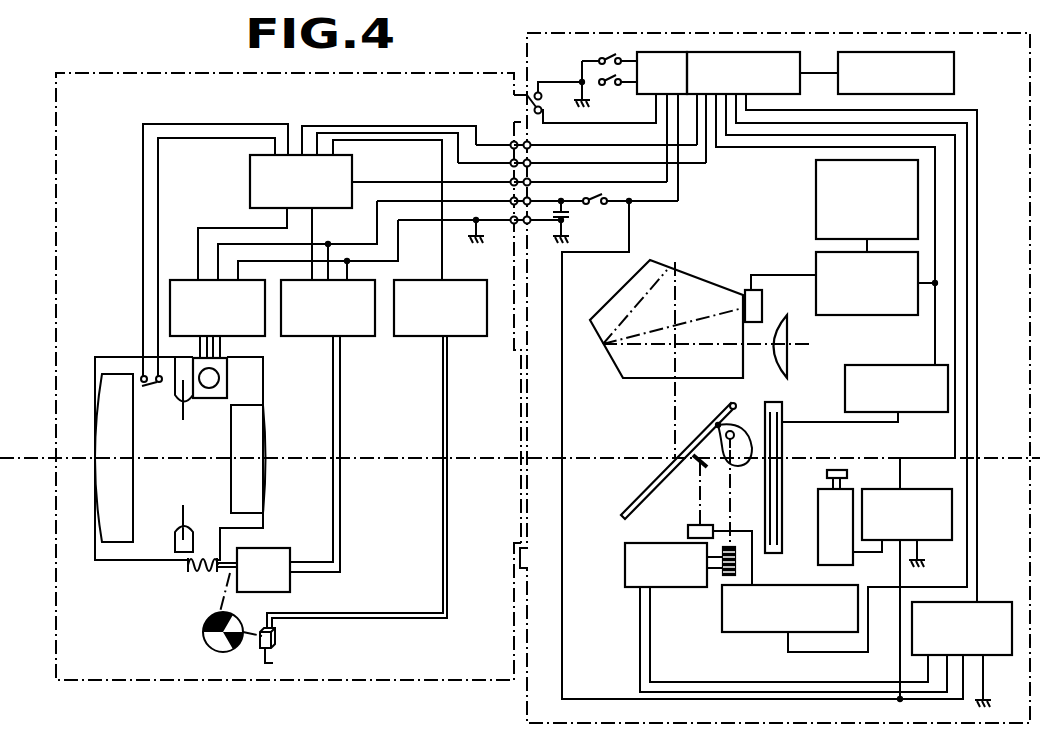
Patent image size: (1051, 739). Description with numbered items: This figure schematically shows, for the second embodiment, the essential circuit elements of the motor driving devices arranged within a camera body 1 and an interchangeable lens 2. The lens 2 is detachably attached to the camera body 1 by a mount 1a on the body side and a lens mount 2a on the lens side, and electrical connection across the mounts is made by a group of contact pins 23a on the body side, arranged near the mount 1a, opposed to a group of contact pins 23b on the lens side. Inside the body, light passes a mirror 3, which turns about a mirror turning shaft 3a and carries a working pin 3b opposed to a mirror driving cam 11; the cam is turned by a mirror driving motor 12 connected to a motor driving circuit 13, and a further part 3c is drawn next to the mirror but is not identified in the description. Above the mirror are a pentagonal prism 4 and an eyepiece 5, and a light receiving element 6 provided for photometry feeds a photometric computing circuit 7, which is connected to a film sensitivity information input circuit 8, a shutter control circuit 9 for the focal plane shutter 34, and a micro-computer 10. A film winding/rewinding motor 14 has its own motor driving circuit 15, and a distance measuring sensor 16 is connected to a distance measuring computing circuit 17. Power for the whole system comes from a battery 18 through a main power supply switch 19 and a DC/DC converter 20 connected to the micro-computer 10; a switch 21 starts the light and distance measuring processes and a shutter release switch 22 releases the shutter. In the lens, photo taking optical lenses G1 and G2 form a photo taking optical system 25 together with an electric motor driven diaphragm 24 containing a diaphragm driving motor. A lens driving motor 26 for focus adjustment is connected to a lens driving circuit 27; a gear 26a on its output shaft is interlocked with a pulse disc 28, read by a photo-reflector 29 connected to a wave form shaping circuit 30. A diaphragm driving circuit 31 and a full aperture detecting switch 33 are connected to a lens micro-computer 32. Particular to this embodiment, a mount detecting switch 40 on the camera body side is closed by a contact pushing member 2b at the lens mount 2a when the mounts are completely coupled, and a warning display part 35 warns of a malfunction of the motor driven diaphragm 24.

The camera body 1 is at (527, 704).
The mount 1a is at (527, 552).
The interchangeable lens 2 is at (240, 682).
The lens mount 2a is at (514, 545).
The contact pushing member 2b is at (518, 95).
The mirror 3 is at (623, 500).
The mirror turning shaft 3a is at (738, 403).
The working pin 3b is at (716, 424).
The sub mirror 3c is at (706, 470).
The pentagonal prism 4 is at (652, 270).
The eyepiece 5 is at (788, 333).
The light receiving element 6 is at (745, 292).
The photometric computing circuit 7 is at (816, 258).
The film sensitivity information input circuit 8 is at (816, 182).
The shutter control circuit 9 is at (856, 365).
The micro-computer 10 is at (800, 66).
The mirror driving cam 11 is at (740, 468).
The mirror driving motor 12 is at (625, 576).
The motor driving circuit 13 is at (1000, 602).
The film winding/rewinding motor 14 is at (818, 490).
The motor driving circuit 15 is at (868, 489).
The distance measuring sensor 16 is at (690, 525).
The distance measuring computing circuit 17 is at (744, 632).
The battery 18 is at (568, 214).
The main power supply switch 19 is at (597, 205).
The DC/DC converter 20 is at (648, 94).
The switch 21 is at (600, 56).
The shutter release switch 22 is at (614, 86).
The group of contact pins 23a is at (530, 142).
The group of contact pins 23b is at (512, 142).
The electric motor driven diaphragm 24 is at (228, 360).
The photo taking optical system 25 is at (150, 562).
The lens driving motor 26 is at (292, 586).
The gear 26a is at (200, 575).
The lens driving circuit 27 is at (358, 336).
The pulse disc 28 is at (210, 650).
The photo-reflector 29 is at (277, 640).
The wave form shaping circuit 30 is at (468, 336).
The diaphragm driving circuit 31 is at (178, 280).
The micro-computer 32 is at (250, 164).
The full aperture detecting switch 33 is at (150, 388).
The focal plane shutter 34 is at (782, 444).
The warning display part 35 is at (954, 70).
The mount detecting switch 40 is at (539, 92).
The photo taking optical lens G1 is at (126, 480).
The photo taking optical lens G2 is at (255, 480).